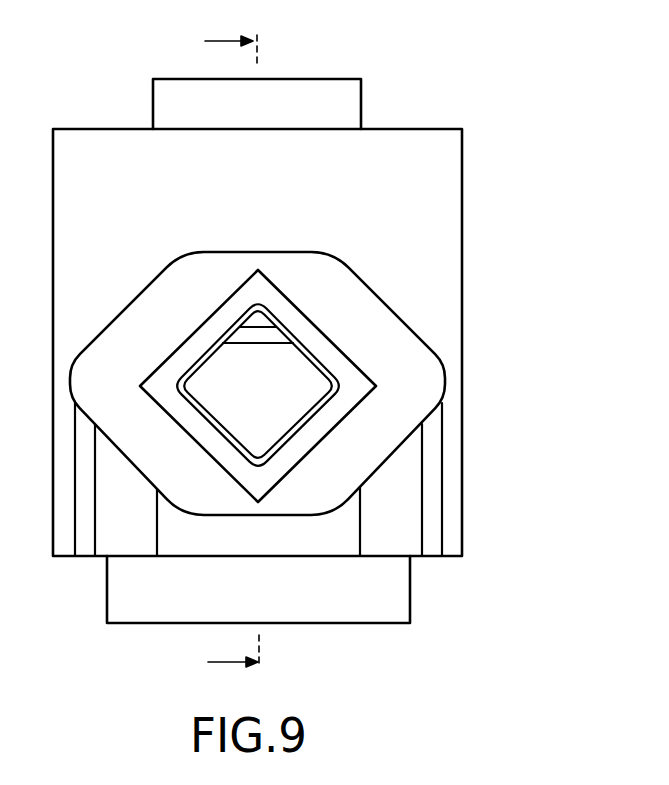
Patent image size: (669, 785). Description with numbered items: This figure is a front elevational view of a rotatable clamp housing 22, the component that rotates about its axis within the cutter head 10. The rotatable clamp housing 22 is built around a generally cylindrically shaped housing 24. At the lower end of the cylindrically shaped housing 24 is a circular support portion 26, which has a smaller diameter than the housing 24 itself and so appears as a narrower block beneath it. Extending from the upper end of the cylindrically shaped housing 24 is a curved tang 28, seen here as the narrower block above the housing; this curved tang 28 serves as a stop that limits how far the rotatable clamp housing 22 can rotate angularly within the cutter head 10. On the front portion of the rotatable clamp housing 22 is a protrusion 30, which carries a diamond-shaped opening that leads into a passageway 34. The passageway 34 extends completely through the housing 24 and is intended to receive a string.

The section line 10- 10 is at (257, 352).
The tool holder assembly 22 is at (314, 352).
The body 24 is at (452, 202).
The lower flange 26 is at (410, 588).
The upper flange 28 is at (352, 99).
The recess 30 is at (405, 325).
The square opening 34 is at (273, 398).